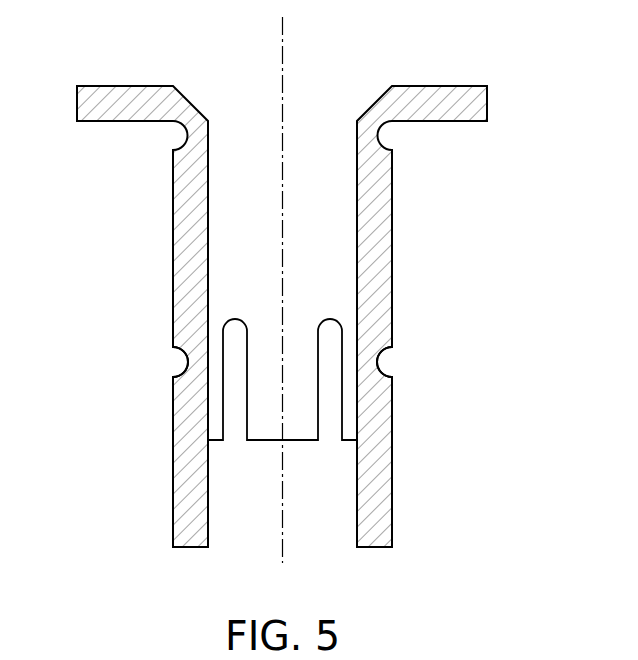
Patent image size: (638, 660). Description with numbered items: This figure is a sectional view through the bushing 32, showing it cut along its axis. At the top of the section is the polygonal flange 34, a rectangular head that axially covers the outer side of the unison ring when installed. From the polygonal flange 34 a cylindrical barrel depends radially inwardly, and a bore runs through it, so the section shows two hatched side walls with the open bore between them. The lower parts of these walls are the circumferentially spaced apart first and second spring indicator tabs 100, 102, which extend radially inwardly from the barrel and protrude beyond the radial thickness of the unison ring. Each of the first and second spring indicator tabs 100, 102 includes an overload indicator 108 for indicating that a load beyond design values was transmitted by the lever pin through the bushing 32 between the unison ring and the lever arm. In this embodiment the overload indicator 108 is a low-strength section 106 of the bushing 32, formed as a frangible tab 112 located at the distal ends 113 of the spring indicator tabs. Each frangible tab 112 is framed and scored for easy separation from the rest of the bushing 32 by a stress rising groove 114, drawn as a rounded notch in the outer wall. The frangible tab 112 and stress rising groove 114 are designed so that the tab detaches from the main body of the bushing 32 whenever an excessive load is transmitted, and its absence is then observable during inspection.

The bushing 32 is at (277, 312).
The polygonal flange 34 is at (435, 86).
The first spring indicator tab 100 is at (173, 455).
The second spring indicator tab 102 is at (392, 428).
The low-strength section 106 is at (173, 405).
The overload indicator 108 is at (173, 500).
The frangible tab 112 is at (392, 476).
The distal ends 113 is at (372, 547).
The stress rising groove 114 is at (173, 362).